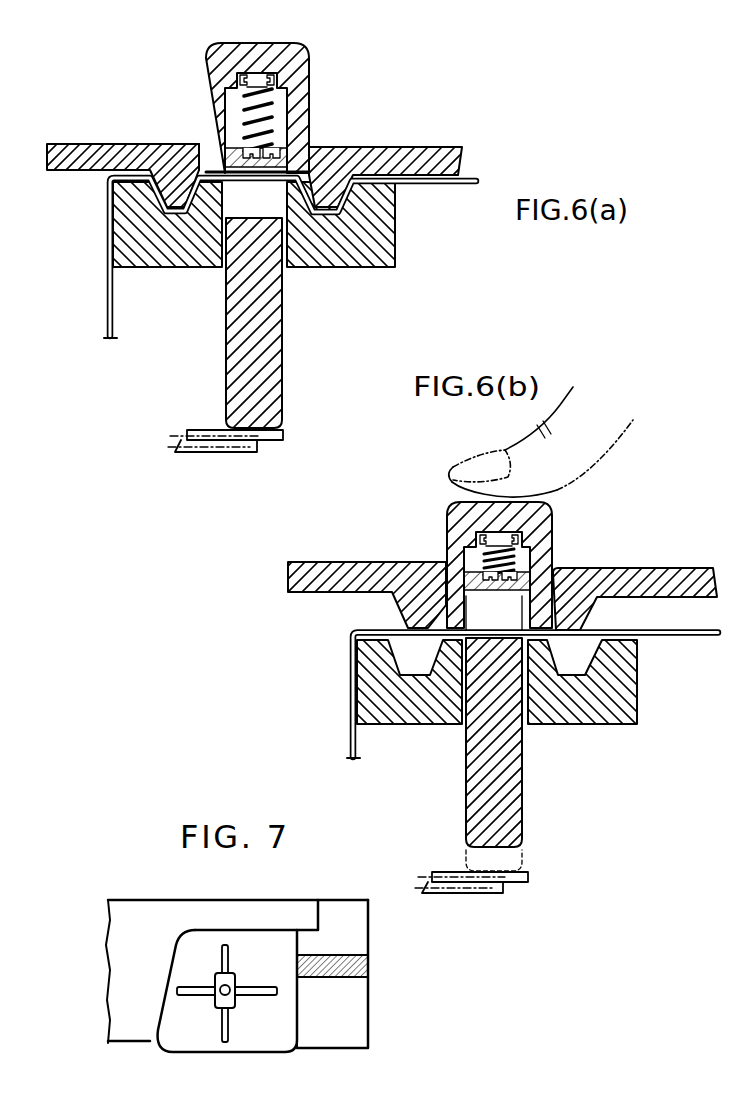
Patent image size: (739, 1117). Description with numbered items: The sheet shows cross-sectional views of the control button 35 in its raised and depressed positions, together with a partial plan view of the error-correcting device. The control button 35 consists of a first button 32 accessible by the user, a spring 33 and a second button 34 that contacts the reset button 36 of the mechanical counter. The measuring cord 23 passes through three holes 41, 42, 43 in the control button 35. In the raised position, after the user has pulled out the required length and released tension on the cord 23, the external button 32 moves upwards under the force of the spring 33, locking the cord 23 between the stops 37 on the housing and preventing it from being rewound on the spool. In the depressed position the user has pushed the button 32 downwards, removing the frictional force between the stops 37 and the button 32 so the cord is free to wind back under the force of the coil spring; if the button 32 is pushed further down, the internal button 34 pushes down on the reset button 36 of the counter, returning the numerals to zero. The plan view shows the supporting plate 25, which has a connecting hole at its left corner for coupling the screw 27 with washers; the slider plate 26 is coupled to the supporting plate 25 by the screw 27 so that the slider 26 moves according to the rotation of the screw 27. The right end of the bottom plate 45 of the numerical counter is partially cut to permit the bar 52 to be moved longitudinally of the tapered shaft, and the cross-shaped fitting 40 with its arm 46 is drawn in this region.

In FIG. 6A, the measuring cord 23 is at (107, 296).
In FIG. 6B, the measuring cord 23 is at (350, 720).
In FIG. 7, the supporting plate 25 is at (348, 917).
In FIG. 7, the slider plate 26 is at (172, 1042).
In FIG. 7, the screw 27 is at (318, 980).
In FIG. 6A, the first button 32 is at (309, 60).
In FIG. 6B, the first button 32 is at (553, 520).
In FIG. 6A, the spring 33 is at (230, 85).
In FIG. 6B, the spring 33 is at (477, 533).
In FIG. 6A, the second button 34 is at (283, 355).
In FIG. 6B, the second button 34 is at (522, 803).
In FIG. 6A, the control button 35 is at (256, 52).
In FIG. 6B, the control button 35 is at (456, 500).
In FIG. 6A, the reset button 36 is at (245, 440).
In FIG. 6B, the reset button 36 is at (530, 878).
In FIG. 6A, the stops 37 is at (200, 150).
In FIG. 6B, the stops 37 is at (443, 557).
In FIG. 7, the cross fitting 40 is at (228, 1000).
In FIG. 6A, the hole 41 is at (205, 155).
In FIG. 6B, the hole 41 is at (447, 552).
In FIG. 6A, the hole 42 is at (292, 165).
In FIG. 6B, the hole 42 is at (540, 590).
In FIG. 6A, the hole 43 is at (310, 170).
In FIG. 6B, the hole 43 is at (532, 648).
In FIG. 7, the bottom plate 45 is at (150, 908).
In FIG. 7, the horizontal arm 46 is at (190, 995).
In FIG. 7, the bar 52 is at (222, 1012).